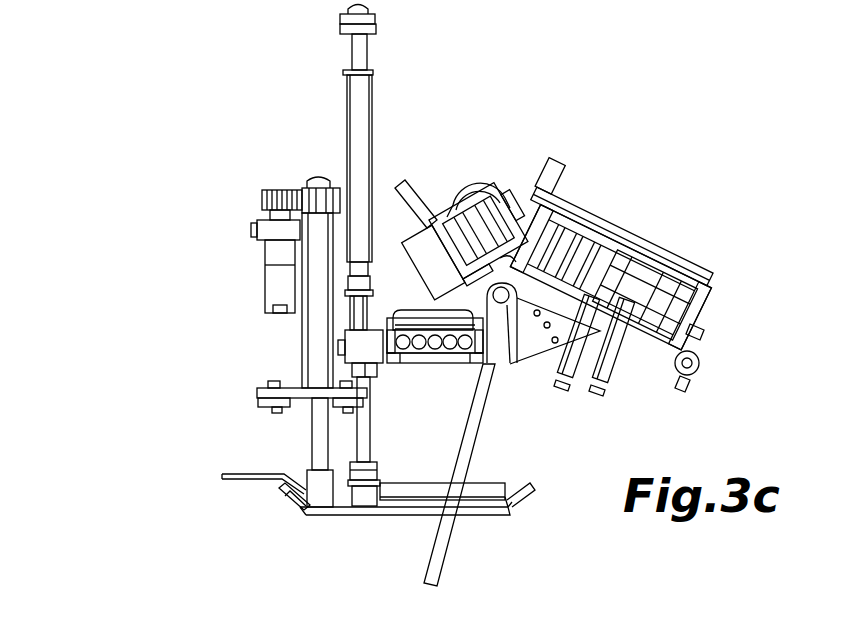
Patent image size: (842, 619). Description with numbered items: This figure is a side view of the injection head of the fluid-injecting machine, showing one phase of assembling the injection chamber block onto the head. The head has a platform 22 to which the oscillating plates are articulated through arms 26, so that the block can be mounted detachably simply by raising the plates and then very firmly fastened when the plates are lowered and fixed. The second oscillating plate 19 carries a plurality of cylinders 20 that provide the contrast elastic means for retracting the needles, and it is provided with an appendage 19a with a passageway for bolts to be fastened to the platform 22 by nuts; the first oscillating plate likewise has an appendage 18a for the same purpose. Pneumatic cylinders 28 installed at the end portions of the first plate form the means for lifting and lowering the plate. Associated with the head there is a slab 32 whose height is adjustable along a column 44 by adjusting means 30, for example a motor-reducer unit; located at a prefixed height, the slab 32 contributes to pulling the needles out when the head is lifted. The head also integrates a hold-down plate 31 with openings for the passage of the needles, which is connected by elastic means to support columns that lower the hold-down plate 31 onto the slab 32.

The appendage 18a is at (413, 178).
The pneumatic cylinder 28 is at (497, 180).
The appendage 19a is at (556, 165).
The second oscillating plate 19 is at (570, 200).
The cylinders 20 is at (610, 257).
The adjusting means 30 is at (260, 208).
The platform 22 is at (422, 365).
The arm 26 is at (513, 362).
The hold-down plate 31 is at (485, 483).
The slab 32 is at (485, 513).
The column 44 is at (317, 432).